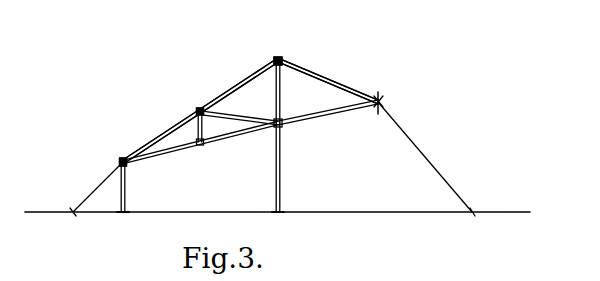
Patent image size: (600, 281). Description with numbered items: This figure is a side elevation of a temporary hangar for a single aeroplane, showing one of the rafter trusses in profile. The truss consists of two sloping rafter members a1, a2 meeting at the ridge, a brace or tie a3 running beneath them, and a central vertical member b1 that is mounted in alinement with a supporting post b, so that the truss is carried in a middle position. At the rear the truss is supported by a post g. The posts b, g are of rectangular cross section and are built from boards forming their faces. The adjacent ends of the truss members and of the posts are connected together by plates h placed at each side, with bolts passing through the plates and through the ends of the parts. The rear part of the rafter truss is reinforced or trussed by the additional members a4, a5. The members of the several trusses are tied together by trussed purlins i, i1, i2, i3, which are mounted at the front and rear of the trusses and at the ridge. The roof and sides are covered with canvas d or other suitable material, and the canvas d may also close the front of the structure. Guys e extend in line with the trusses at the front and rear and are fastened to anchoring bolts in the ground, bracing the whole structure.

The rafter member a1 is at (258, 70).
The rafter member a2 is at (322, 77).
The brace or tie a3 is at (248, 137).
The reinforcing or trussing member a4 is at (197, 130).
The reinforcing or trussing member a5 is at (242, 118).
The supporting post b is at (281, 170).
The vertical member b1 is at (281, 90).
The canvas d is at (173, 126).
The guy e is at (96, 186).
The post g is at (126, 193).
The plate h is at (124, 156).
The trussed purlin i is at (121, 161).
The trussed purlin i1 is at (381, 102).
The trussed purlin i2 is at (272, 60).
The trussed purlin i3 is at (199, 108).